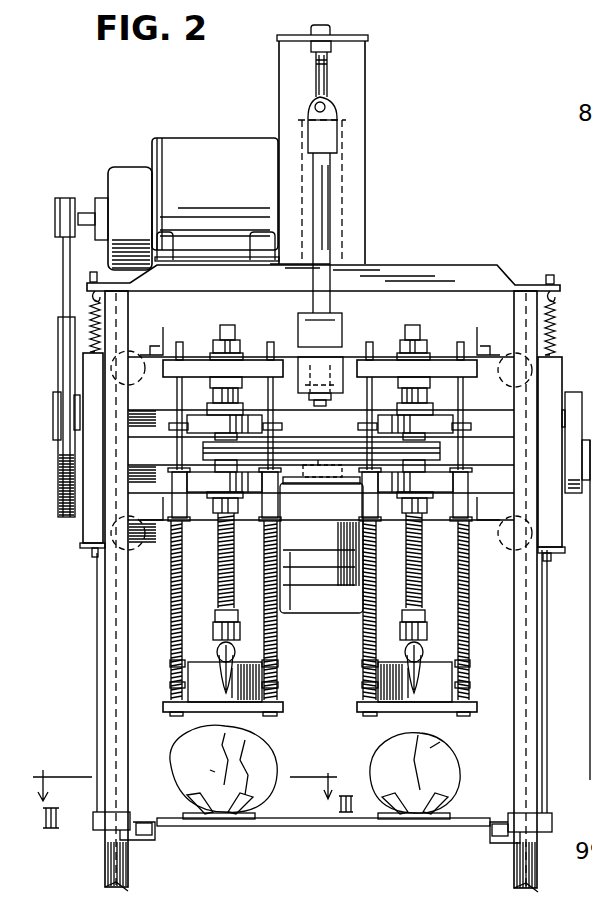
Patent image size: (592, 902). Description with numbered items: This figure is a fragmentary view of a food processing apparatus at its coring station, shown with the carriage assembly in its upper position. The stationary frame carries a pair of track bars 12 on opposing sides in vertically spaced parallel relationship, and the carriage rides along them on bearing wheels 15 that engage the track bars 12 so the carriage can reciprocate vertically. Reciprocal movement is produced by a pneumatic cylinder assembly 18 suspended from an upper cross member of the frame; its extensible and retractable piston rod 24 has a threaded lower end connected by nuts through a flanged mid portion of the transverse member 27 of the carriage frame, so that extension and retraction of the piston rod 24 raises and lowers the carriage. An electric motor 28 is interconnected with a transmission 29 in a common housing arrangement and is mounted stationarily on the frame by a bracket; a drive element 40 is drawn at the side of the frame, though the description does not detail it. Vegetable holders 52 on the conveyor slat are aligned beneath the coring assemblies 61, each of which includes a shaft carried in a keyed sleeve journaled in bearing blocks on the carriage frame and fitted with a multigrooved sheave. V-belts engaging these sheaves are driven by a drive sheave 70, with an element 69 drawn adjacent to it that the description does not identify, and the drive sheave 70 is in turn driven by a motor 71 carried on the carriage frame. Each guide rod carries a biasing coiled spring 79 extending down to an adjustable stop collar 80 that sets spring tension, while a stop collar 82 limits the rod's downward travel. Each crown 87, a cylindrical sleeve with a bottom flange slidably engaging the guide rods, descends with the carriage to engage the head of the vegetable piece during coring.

The track bars 12 is at (100, 590).
The bearing wheels 15 is at (133, 352).
The pneumatic cylinder assembly 18 is at (322, 180).
The piston rod 24 is at (325, 352).
The transverse member 27 is at (303, 367).
The electric motor 28 is at (215, 173).
The transmission 29 is at (131, 172).
The drive pulley 40 is at (591, 603).
The vegetable holders 52 is at (195, 800).
The coring assembly 61 is at (228, 335).
The gear coupling 69 is at (340, 446).
The drive sheave 70 is at (320, 443).
The motor 71 is at (343, 608).
The coiled spring 79 is at (470, 637).
The adjustable stop collar 80 is at (170, 667).
The stop collar 82 is at (178, 468).
The crown 87 is at (245, 700).